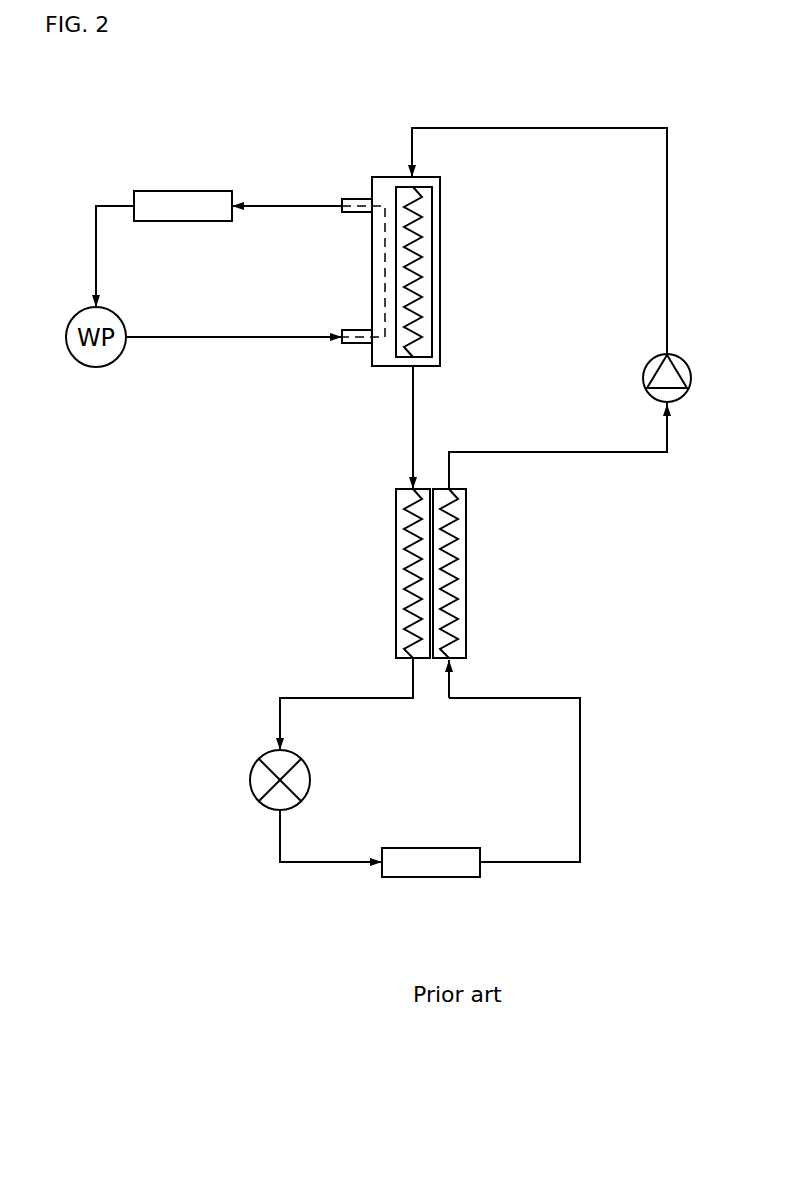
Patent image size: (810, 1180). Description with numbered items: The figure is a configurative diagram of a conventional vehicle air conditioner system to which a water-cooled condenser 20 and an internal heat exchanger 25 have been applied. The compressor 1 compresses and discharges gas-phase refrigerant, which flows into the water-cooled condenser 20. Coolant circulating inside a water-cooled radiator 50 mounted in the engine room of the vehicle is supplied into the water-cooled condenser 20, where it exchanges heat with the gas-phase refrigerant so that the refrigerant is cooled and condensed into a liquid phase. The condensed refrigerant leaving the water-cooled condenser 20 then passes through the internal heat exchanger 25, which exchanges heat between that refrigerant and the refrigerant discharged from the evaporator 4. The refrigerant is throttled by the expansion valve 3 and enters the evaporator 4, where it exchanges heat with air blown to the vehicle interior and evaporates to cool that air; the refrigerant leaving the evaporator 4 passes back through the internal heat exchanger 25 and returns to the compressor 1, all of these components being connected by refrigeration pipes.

The water-cooled condenser 20 is at (388, 177).
The water-cooled radiator 50 is at (182, 191).
The compressor 1 is at (684, 356).
The internal heat exchanger 25 is at (396, 577).
The expansion valve 3 is at (250, 779).
The evaporator 4 is at (430, 877).